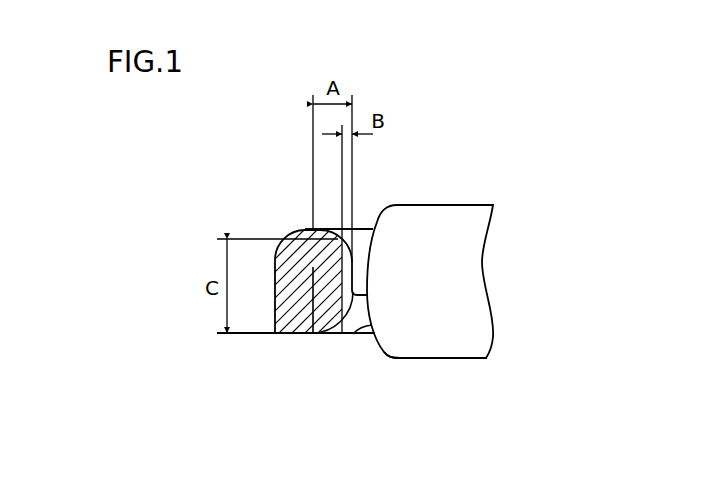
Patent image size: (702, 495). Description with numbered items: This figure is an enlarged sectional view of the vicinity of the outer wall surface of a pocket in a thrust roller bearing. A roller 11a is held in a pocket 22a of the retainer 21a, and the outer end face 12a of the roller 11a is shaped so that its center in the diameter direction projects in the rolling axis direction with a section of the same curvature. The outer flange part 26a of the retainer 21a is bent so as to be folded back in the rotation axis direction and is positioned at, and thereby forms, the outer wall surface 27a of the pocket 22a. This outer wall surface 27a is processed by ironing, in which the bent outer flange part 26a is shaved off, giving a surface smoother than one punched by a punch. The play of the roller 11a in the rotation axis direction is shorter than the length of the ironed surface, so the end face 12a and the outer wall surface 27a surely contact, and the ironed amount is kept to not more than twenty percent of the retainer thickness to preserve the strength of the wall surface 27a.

The roller 11a is at (440, 227).
The end face 12a is at (354, 335).
The retainer 21a is at (247, 187).
The pocket 22a is at (387, 375).
The outer flange part 26a is at (293, 322).
The outer wall surface 27a is at (354, 270).